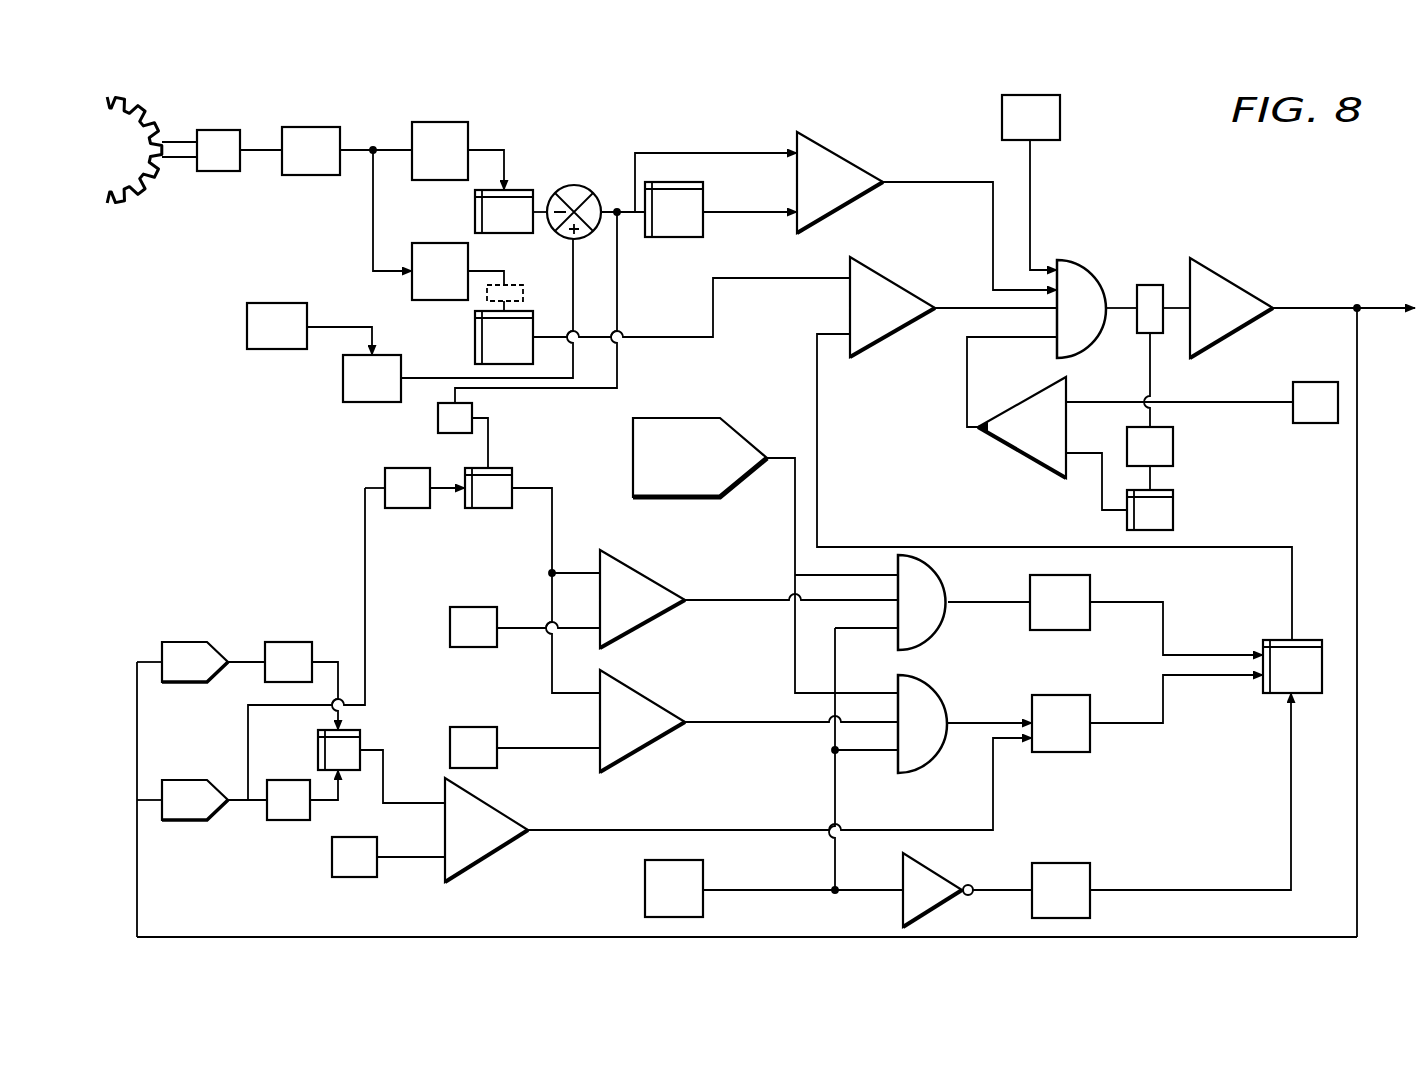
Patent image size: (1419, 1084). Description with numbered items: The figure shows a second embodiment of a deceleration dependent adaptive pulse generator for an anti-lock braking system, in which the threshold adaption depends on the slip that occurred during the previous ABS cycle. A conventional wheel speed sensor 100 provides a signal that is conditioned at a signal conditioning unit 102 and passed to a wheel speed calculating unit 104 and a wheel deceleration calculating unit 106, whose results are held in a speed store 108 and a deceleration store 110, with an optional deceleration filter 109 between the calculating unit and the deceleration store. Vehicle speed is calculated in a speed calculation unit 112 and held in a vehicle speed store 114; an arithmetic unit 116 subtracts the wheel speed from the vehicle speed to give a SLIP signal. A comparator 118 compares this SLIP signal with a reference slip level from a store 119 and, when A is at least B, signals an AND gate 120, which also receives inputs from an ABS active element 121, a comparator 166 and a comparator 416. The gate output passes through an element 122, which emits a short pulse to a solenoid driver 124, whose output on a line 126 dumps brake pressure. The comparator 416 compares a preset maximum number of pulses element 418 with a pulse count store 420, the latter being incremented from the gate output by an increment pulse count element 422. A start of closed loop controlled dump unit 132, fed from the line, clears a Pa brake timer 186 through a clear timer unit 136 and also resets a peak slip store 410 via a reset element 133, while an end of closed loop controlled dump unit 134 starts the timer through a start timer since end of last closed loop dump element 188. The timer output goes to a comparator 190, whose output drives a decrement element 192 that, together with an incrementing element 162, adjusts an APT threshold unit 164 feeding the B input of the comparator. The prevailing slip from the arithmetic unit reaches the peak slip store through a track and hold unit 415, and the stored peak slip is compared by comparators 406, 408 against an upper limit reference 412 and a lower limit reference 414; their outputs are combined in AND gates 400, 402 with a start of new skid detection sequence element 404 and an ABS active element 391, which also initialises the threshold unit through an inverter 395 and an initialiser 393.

The wheel speed sensor 100 is at (180, 125).
The signal conditioning unit 102 is at (307, 172).
The wheel speed calculating unit 104 is at (442, 124).
The wheel deceleration calculating unit 106 is at (450, 253).
The speed store 108 is at (517, 191).
The deceleration filter 109 is at (540, 272).
The deceleration store 110 is at (473, 339).
The speed calculation unit 112 is at (268, 343).
The vehicle speed store 114 is at (355, 390).
The arithmetic unit 116 is at (580, 181).
The comparator 118 is at (828, 152).
The store 119 is at (677, 228).
The AND gate 120 is at (1080, 262).
The ABS active element 121 is at (1053, 117).
The element 122 is at (1150, 287).
The solenoid driver 124 is at (1242, 295).
The line 126 is at (1322, 308).
The start of closed loop controlled dump unit 132 is at (187, 790).
The reset element 133 is at (412, 497).
The end of closed loop controlled dump unit 134 is at (190, 648).
The clear timer unit 136 is at (285, 787).
The incrementing element 162 is at (1053, 620).
The APT threshold unit 164 is at (1280, 687).
The comparator 166 is at (890, 287).
The Pa brake timer 186 is at (357, 742).
The start timer since end of last closed loop dump element 188 is at (293, 648).
The comparator 190 is at (493, 840).
The decrement element 192 is at (1088, 737).
The ABS active element 391 is at (647, 887).
The initialiser 393 is at (1092, 878).
The inverter 395 is at (930, 880).
The AND gate 400 is at (932, 693).
The AND gate 402 is at (938, 583).
The start of new skid detection sequence element 404 is at (727, 438).
The comparator 406 is at (645, 732).
The comparator 408 is at (653, 610).
The peak slip store 410 is at (492, 505).
The upper limit reference 412 is at (467, 728).
The lower limit reference 414 is at (450, 628).
The track and hold unit 415 is at (438, 418).
The comparator 416 is at (1022, 447).
The maximum number of pulses element 418 is at (1313, 413).
The pulse count store 420 is at (1173, 510).
The increment pulse count element 422 is at (1173, 447).